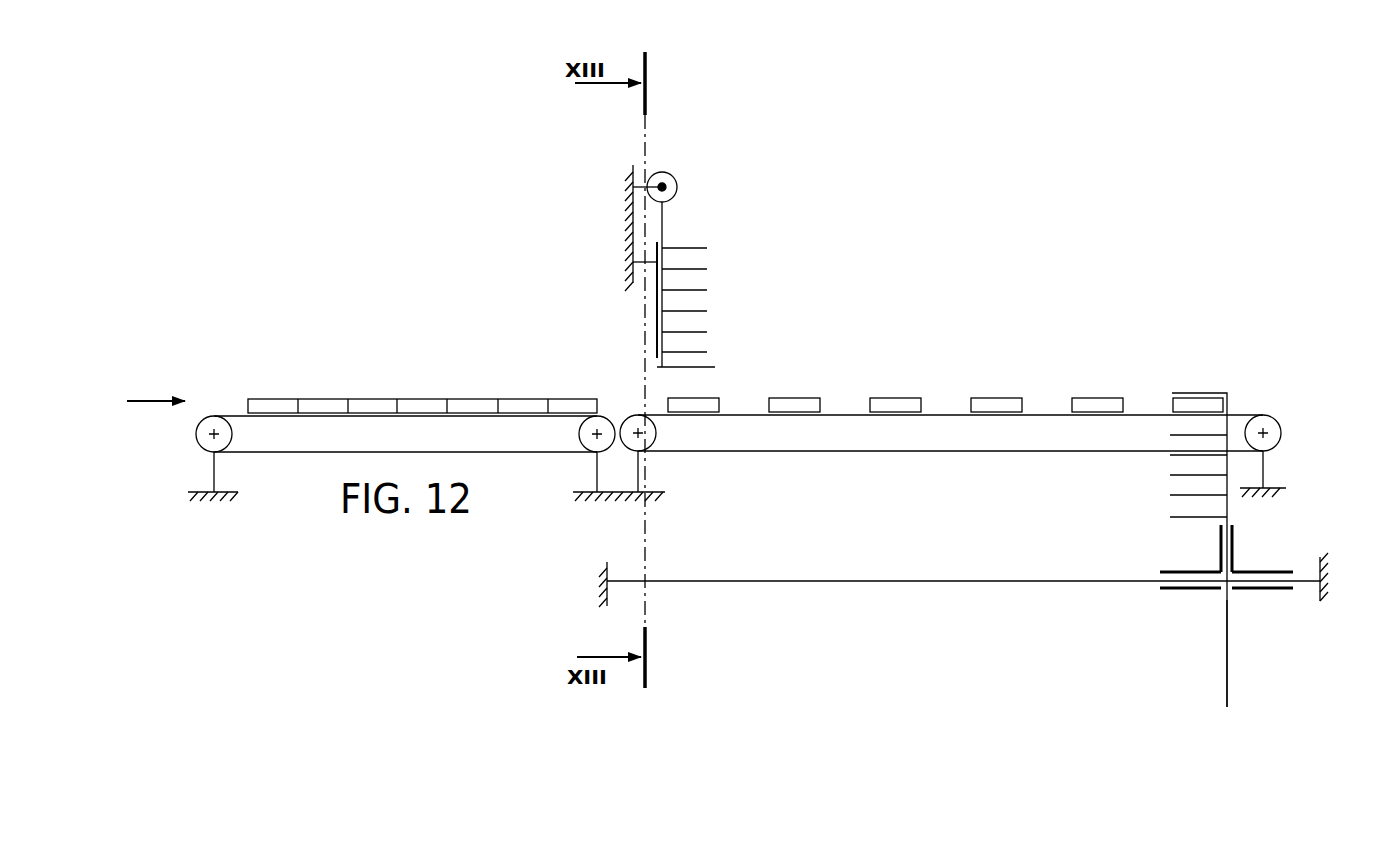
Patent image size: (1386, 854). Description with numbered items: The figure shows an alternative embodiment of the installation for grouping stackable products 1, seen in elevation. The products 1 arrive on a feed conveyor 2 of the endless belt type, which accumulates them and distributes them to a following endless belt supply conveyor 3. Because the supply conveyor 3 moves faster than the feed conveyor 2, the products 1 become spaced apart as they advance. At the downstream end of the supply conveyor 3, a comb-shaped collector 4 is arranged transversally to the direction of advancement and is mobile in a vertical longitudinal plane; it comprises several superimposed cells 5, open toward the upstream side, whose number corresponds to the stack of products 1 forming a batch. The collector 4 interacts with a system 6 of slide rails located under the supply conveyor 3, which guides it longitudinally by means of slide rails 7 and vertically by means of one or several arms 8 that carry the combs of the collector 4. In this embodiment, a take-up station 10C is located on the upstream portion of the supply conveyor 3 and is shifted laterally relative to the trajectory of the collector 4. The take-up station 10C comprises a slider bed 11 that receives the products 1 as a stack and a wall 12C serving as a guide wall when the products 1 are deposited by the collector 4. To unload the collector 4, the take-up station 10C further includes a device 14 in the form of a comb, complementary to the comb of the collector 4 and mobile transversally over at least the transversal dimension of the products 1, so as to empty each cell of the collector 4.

The products 1 is at (380, 407).
The feed conveyor 2 is at (231, 413).
The supply conveyor 3 is at (941, 411).
The collector 4 is at (1216, 390).
The cells 5 is at (1183, 512).
The system of slide rails 6 is at (1250, 554).
The slide rails 7 is at (967, 582).
The arms 8 is at (1226, 682).
The take-up station 10C is at (654, 336).
The slider bed 11 is at (703, 368).
The wall 12C is at (657, 355).
The device in the form of a comb 14 is at (686, 211).